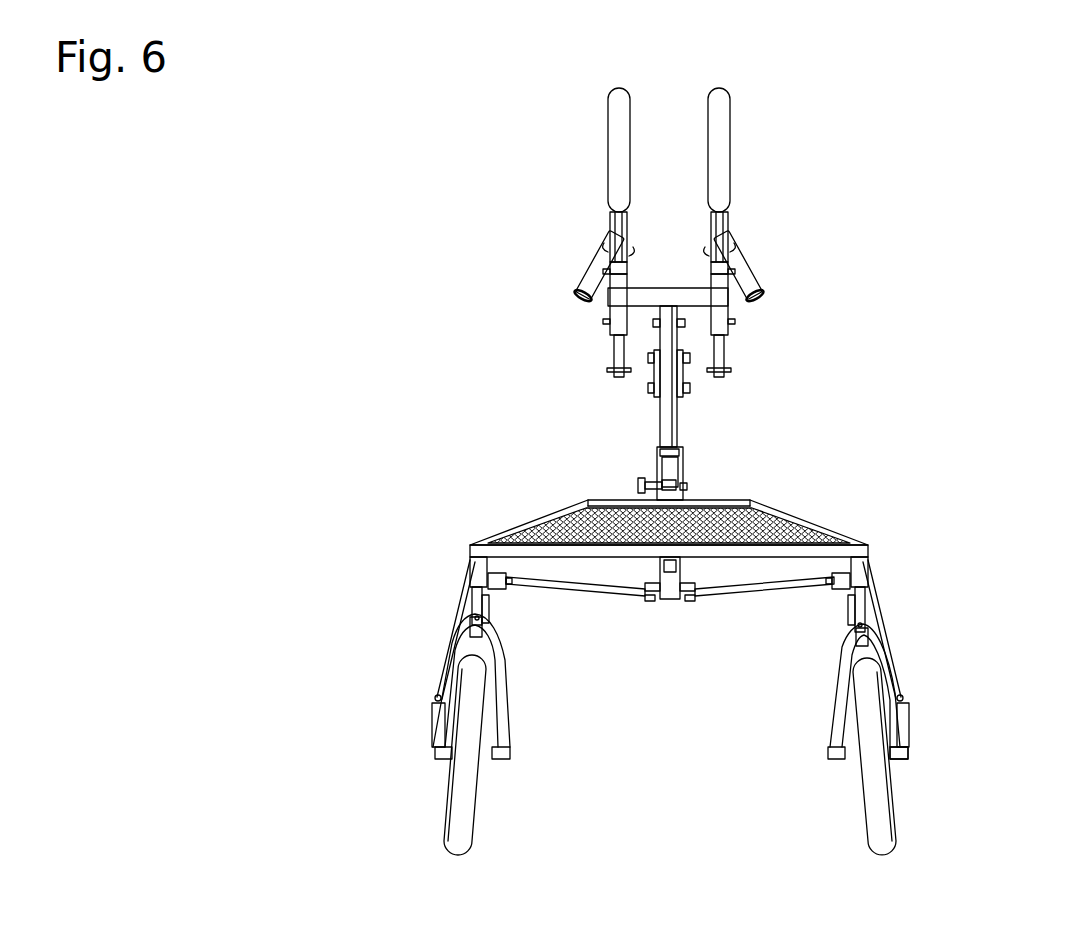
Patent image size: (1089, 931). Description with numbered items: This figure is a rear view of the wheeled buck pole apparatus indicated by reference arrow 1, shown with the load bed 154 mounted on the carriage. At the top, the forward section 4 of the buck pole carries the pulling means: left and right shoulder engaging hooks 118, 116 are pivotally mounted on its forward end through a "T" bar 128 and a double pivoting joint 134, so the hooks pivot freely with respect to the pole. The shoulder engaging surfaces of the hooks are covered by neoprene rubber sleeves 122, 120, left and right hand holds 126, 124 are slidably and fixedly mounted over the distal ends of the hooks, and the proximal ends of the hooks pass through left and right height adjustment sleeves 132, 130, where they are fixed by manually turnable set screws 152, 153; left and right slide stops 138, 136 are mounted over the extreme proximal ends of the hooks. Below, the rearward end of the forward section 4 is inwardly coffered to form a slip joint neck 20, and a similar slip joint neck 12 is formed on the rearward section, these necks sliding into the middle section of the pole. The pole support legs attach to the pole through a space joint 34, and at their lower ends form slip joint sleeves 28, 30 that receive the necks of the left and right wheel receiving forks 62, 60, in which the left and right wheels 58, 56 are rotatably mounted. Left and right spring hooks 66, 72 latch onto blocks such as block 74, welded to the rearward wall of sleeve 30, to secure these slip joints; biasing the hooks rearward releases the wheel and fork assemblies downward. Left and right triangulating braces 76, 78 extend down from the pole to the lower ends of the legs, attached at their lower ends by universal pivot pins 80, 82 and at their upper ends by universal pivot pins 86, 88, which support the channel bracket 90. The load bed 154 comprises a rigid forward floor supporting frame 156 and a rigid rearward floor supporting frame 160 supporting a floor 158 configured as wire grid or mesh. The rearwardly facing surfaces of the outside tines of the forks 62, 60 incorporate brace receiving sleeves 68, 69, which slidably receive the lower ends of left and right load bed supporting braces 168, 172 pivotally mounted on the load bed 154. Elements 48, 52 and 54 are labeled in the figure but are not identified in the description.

The wheelbarrow / cart 1 is at (937, 338).
The forward section 4 is at (668, 420).
The slip joint neck 12 is at (693, 590).
The slip joint neck 20 is at (670, 470).
The slip joint sleeve 28 is at (480, 572).
The slip joint sleeve 30 is at (860, 570).
The space joint 34 is at (706, 476).
The bracket top 48 is at (670, 455).
The locking bolt 52 is at (640, 484).
The left tie rod 54 is at (600, 589).
The right wheel 56 is at (878, 830).
The left wheel 58 is at (458, 820).
The right wheel receiving fork 60 is at (838, 722).
The left wheel receiving fork 62 is at (505, 706).
The left spring hook 66 is at (475, 605).
The brace receiving sleeve 68 is at (437, 696).
The brace receiving sleeve 69 is at (905, 700).
The right spring hook 72 is at (880, 605).
The right block 74 is at (866, 605).
The left triangulating brace 76 is at (578, 587).
The right triangulating brace 78 is at (780, 588).
The universal pivot pin 80 is at (496, 588).
The universal pivot pin 82 is at (836, 588).
The universal pivot pin 86 is at (650, 600).
The universal pivot pin 88 is at (688, 603).
The channel bracket 90 is at (670, 603).
The right shoulder engaging hook 116 is at (720, 223).
The left shoulder engaging hook 118 is at (618, 223).
The neoprene rubber sleeve 120 is at (613, 117).
The neoprene rubber sleeve 122 is at (725, 117).
The right hand hold 124 is at (732, 258).
The left hand hold 126 is at (606, 258).
The T bar 128 is at (650, 297).
The right height adjustment sleeve 130 is at (737, 272).
The left height adjustment sleeve 132 is at (620, 314).
The double pivoting joint 134 is at (657, 373).
The right slide stop 136 is at (721, 366).
The left slide stop 138 is at (617, 366).
The set screw 152 is at (610, 270).
The set screw 153 is at (737, 322).
The load bed 154 is at (846, 525).
The forward floor supporting frame 156 is at (790, 522).
The floor 158 is at (748, 520).
The rearward floor supporting frame 160 is at (545, 552).
The left load bed supporting brace 168 is at (455, 620).
The right load bed supporting brace 172 is at (888, 640).